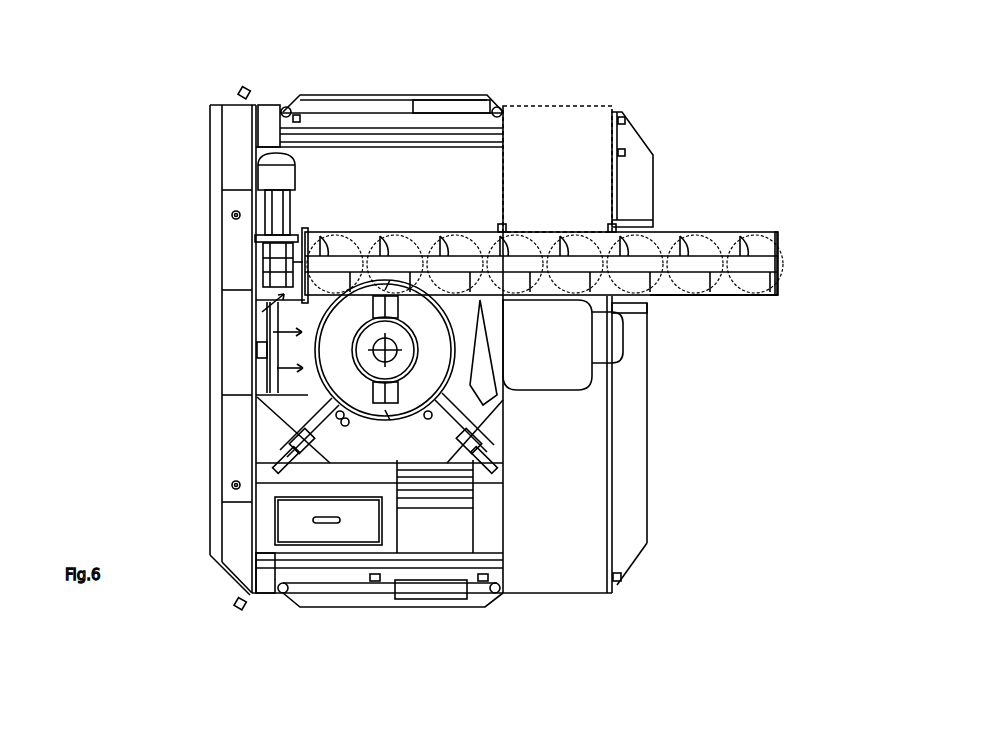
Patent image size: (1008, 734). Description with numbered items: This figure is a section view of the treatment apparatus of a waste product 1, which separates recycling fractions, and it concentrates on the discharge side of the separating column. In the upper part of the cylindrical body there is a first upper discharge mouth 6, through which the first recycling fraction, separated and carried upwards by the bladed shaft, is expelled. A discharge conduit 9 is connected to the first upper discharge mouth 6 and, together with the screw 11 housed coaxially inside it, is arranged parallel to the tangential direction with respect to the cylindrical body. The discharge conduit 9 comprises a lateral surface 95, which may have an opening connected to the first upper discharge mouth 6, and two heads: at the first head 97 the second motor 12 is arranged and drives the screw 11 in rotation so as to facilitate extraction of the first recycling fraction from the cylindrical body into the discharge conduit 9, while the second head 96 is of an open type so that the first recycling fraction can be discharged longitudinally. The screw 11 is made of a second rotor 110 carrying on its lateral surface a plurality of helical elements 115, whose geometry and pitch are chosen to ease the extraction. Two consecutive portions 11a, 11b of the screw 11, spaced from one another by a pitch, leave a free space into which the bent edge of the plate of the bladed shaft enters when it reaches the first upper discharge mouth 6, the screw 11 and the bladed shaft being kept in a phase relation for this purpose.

The treatment apparatus of a waste product 1 is at (110, 108).
The first upper discharge mouth 6 is at (432, 290).
The discharge conduit 9 is at (692, 302).
The screw 11 is at (752, 242).
The first portion of the screw 11a is at (318, 315).
The second portion of the screw 11b is at (457, 348).
The second motor 12 is at (298, 204).
The lateral surface 95 is at (743, 302).
The second head 96 is at (782, 242).
The first head 97 is at (298, 288).
The second rotor 110 is at (652, 267).
The helical elements 115 is at (568, 245).